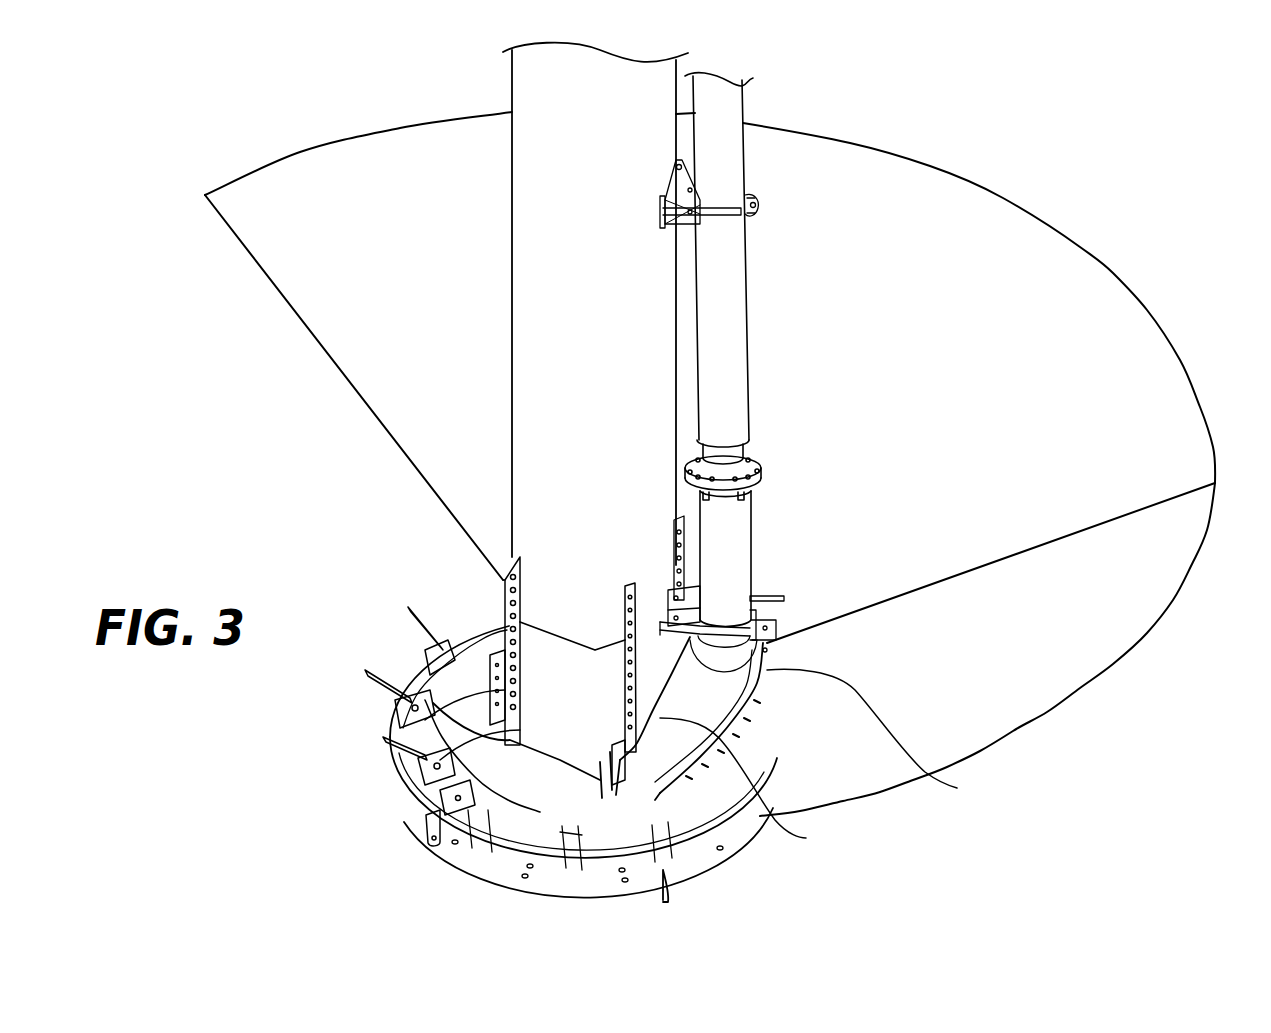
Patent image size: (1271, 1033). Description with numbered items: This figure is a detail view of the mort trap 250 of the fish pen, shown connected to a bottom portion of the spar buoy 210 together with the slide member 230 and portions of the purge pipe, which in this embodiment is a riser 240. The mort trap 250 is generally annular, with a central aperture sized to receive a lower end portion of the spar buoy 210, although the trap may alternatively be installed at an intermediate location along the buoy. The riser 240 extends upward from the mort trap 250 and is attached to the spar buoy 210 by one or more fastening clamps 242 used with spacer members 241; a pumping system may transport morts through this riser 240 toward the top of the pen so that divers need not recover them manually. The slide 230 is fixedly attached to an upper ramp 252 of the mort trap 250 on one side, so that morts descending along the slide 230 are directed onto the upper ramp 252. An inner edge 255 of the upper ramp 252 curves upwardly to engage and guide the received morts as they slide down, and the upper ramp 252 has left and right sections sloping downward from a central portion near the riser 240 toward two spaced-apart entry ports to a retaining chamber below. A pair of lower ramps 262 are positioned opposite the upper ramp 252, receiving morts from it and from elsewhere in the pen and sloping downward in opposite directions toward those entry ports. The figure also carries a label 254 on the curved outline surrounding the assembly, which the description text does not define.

The spar buoy 210 is at (512, 84).
The slide member 230 is at (1093, 297).
The blade edge 254 is at (1003, 198).
The riser 240 is at (740, 172).
The spacer member 241 is at (672, 178).
The fastening clamp 242 is at (748, 200).
The mort trap 250 is at (710, 862).
The upper ramp 252 is at (720, 715).
The inner edge 255 is at (829, 760).
The lower ramp 262 is at (430, 815).